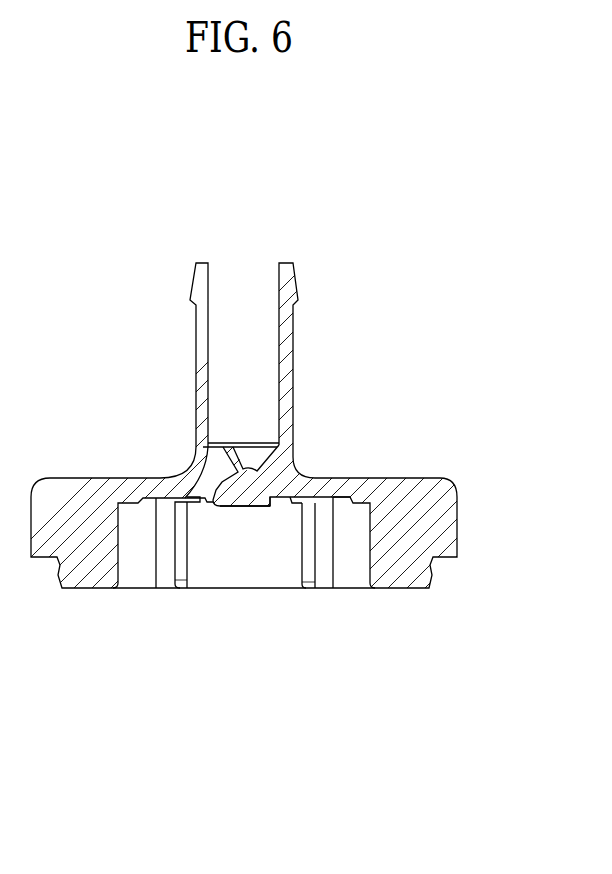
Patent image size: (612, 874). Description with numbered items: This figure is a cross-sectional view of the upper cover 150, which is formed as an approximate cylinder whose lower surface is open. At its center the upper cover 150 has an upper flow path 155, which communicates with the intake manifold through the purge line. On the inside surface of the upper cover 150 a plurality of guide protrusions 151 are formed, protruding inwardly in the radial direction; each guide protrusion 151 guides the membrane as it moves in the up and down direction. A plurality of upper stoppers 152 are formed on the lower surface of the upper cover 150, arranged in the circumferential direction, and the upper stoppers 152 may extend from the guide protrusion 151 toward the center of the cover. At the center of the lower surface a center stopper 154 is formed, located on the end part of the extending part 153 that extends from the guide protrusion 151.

The upper cover 150 is at (85, 230).
The guide protrusion 151 is at (323, 560).
The upper stopper 152 is at (292, 493).
The extending part 153 is at (292, 490).
The center stopper 154 is at (243, 493).
The upper flow path 155 is at (208, 362).